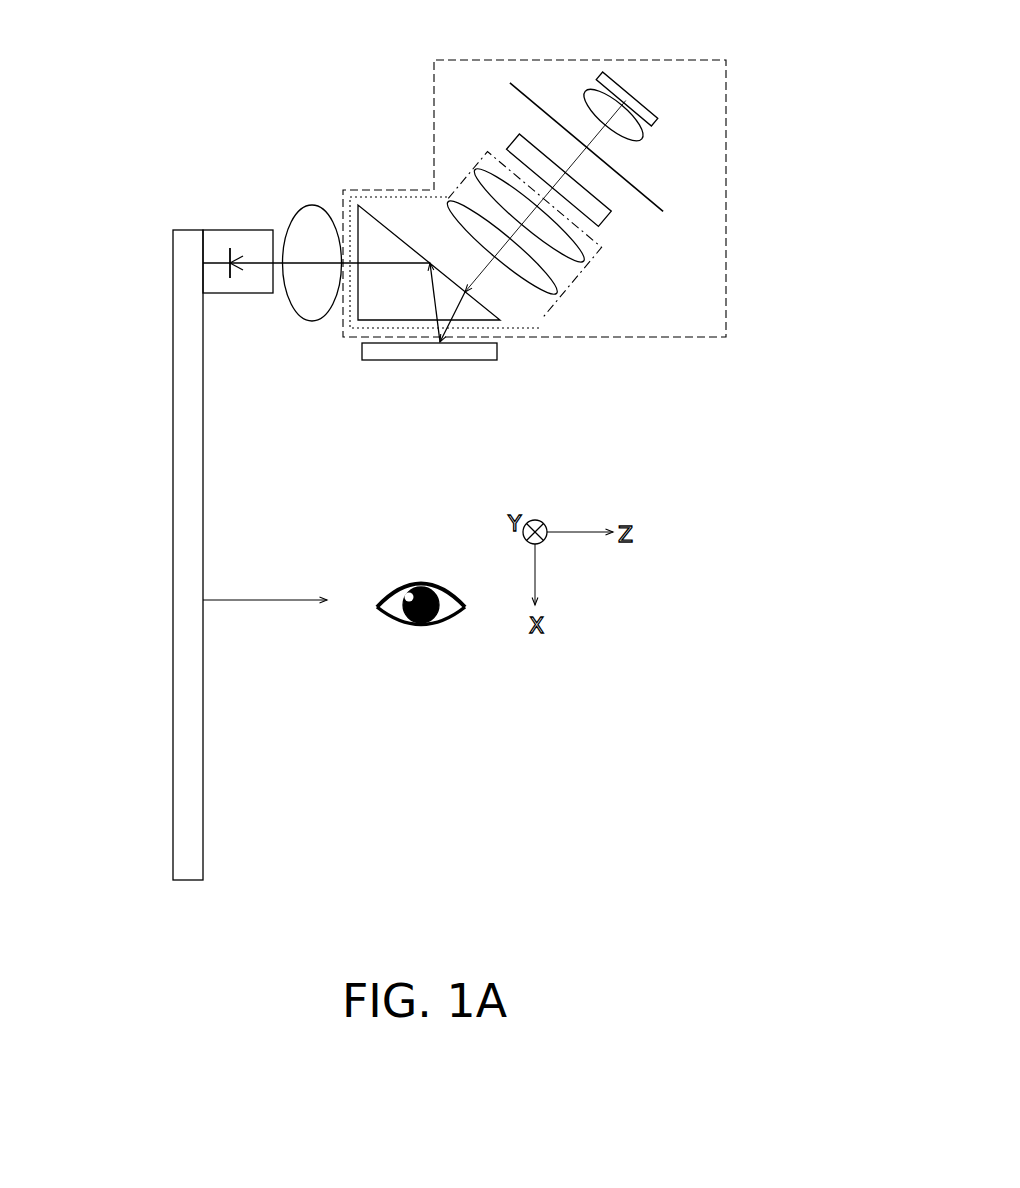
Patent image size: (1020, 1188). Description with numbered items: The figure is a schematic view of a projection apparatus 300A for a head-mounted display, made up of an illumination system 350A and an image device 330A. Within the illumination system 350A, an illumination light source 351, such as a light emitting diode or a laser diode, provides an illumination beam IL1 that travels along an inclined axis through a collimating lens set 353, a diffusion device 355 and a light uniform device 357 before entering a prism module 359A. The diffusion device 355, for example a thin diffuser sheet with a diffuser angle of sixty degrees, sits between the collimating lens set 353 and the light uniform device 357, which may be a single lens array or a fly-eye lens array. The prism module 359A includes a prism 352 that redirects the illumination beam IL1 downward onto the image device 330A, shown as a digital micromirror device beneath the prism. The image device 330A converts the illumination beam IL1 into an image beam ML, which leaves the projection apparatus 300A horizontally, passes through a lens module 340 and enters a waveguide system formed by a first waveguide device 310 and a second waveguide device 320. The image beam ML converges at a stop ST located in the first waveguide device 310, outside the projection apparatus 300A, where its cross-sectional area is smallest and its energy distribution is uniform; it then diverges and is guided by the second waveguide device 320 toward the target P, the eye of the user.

The projection apparatus 300A is at (534, 429).
The first waveguide device 310 is at (239, 228).
The second waveguide device 320 is at (172, 378).
The image device 330A is at (498, 351).
The lens module 340 is at (310, 323).
The illumination system 350A is at (530, 59).
The illumination light source 351 is at (622, 80).
The prism 352 is at (497, 309).
The collimating lens set 353 is at (585, 92).
The diffusion device 355 is at (665, 210).
The light uniform device 357 is at (513, 140).
The prism module 359A is at (375, 189).
The stop ST is at (227, 263).
The image beam ML is at (318, 262).
The illumination beam IL1 is at (612, 140).
The target P is at (388, 615).